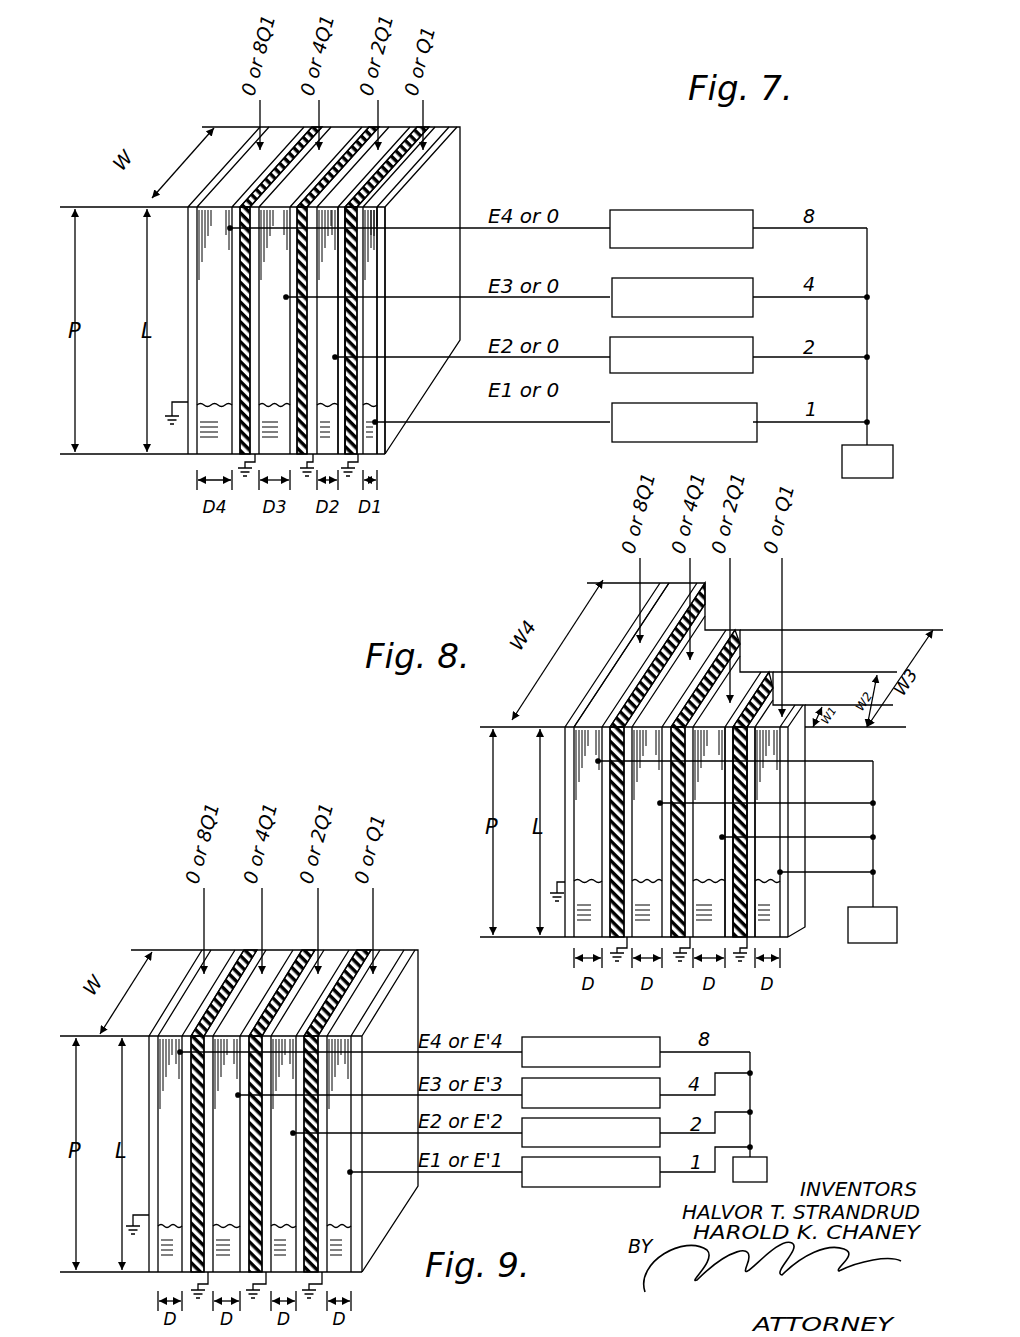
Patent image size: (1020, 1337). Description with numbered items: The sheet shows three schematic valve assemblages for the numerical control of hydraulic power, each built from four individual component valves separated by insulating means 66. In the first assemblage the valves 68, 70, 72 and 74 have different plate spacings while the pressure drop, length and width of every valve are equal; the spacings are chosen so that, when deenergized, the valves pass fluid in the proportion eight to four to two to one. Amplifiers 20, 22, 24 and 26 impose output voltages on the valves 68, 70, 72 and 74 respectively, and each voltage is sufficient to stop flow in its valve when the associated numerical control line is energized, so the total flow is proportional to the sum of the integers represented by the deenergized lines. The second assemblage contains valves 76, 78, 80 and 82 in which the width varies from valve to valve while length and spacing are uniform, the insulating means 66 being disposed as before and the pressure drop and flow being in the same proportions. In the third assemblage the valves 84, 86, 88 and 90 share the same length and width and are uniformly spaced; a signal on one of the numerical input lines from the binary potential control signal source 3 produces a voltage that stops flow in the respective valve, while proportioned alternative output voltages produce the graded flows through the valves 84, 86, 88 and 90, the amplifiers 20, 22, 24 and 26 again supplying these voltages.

In FIG. 7, the insulating means 66 is at (332, 175).
In FIG. 8, the insulating means 66 is at (701, 697).
In FIG. 9, the insulating means 66 is at (292, 986).
In FIG. 7, the valve 68 is at (222, 318).
In FIG. 7, the valve 70 is at (286, 328).
In FIG. 7, the valve 72 is at (344, 338).
In FIG. 7, the valve 74 is at (360, 275).
In FIG. 8, the valve 76 is at (614, 710).
In FIG. 8, the valve 78 is at (666, 810).
In FIG. 8, the valve 80 is at (727, 867).
In FIG. 8, the valve 82 is at (763, 821).
In FIG. 9, the valve 84 is at (182, 1144).
In FIG. 9, the valve 86 is at (238, 1144).
In FIG. 9, the valve 88 is at (295, 1156).
In FIG. 9, the valve 90 is at (351, 1186).
In FIG. 7, the amplifier 20 is at (688, 211).
In FIG. 9, the amplifier 20 is at (588, 1036).
In FIG. 7, the amplifier 22 is at (701, 279).
In FIG. 9, the amplifier 22 is at (654, 1079).
In FIG. 7, the amplifier 24 is at (733, 336).
In FIG. 9, the amplifier 24 is at (647, 1117).
In FIG. 7, the amplifier 26 is at (710, 403).
In FIG. 9, the amplifier 26 is at (567, 1187).
In FIG. 7, the binary potential control signal source 3 is at (867, 461).
In FIG. 8, the binary potential control signal source 3 is at (872, 925).
In FIG. 9, the binary potential control signal source 3 is at (750, 1169).